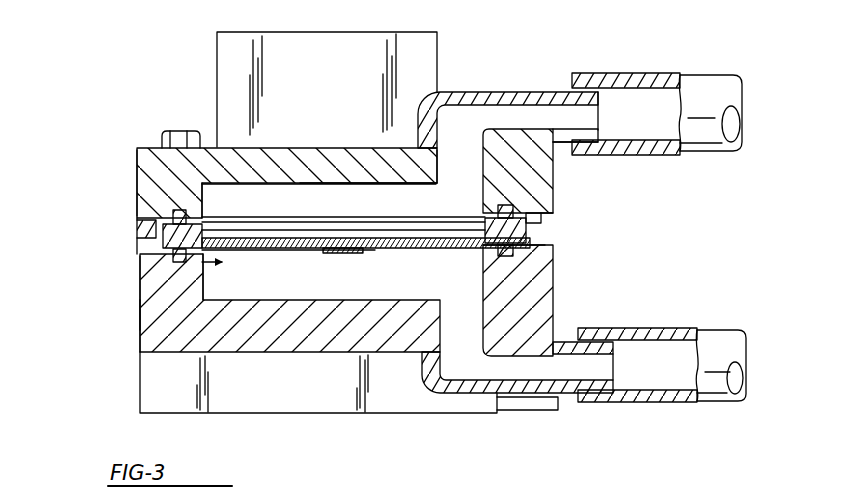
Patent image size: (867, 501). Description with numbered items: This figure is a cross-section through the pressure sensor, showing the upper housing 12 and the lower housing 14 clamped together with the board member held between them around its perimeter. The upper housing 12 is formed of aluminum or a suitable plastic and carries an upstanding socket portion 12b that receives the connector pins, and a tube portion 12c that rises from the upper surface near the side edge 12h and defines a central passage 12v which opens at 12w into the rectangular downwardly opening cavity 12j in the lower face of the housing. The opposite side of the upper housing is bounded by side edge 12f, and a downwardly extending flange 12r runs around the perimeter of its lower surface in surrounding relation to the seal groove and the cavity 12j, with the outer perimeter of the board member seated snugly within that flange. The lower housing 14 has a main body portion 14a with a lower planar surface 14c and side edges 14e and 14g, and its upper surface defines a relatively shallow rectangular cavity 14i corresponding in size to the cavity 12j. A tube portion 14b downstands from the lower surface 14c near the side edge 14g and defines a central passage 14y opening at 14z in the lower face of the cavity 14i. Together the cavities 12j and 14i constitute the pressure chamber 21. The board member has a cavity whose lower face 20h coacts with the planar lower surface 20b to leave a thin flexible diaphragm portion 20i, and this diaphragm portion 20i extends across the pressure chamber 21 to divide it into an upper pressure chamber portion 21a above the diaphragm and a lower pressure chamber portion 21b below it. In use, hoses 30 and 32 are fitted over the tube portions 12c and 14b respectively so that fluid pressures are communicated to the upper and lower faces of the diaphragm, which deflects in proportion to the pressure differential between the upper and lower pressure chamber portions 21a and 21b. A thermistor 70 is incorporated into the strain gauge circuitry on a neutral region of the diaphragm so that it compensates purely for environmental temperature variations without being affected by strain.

The upper housing 12 is at (128, 136).
The socket portion 12b is at (217, 85).
The tube portion 12c is at (517, 92).
The side edge 12f is at (137, 178).
The side edge 12h is at (553, 165).
The cavity 12j is at (327, 196).
The flange 12r is at (137, 238).
The central passage 12v is at (600, 112).
The passage opening 12w is at (440, 157).
The lower housing 14 is at (118, 386).
The main body portion 14a is at (132, 331).
The tube portion 14b is at (597, 393).
The lower surface 14c is at (297, 352).
The side edge 14e is at (138, 306).
The side edge 14g is at (556, 262).
The shallow cavity 14i is at (353, 297).
The central passage 14y is at (613, 370).
The passage opening 14z is at (440, 303).
The lower surface 20b is at (398, 248).
The lower face of cavity 20h is at (367, 237).
The diaphragm portion 20i is at (303, 250).
The pressure chamber 21 is at (140, 283).
The upper pressure chamber portion 21a is at (292, 202).
The lower pressure chamber portion 21b is at (197, 284).
The hose 30 is at (682, 73).
The hose 32 is at (677, 328).
The thermistor 70 is at (272, 262).